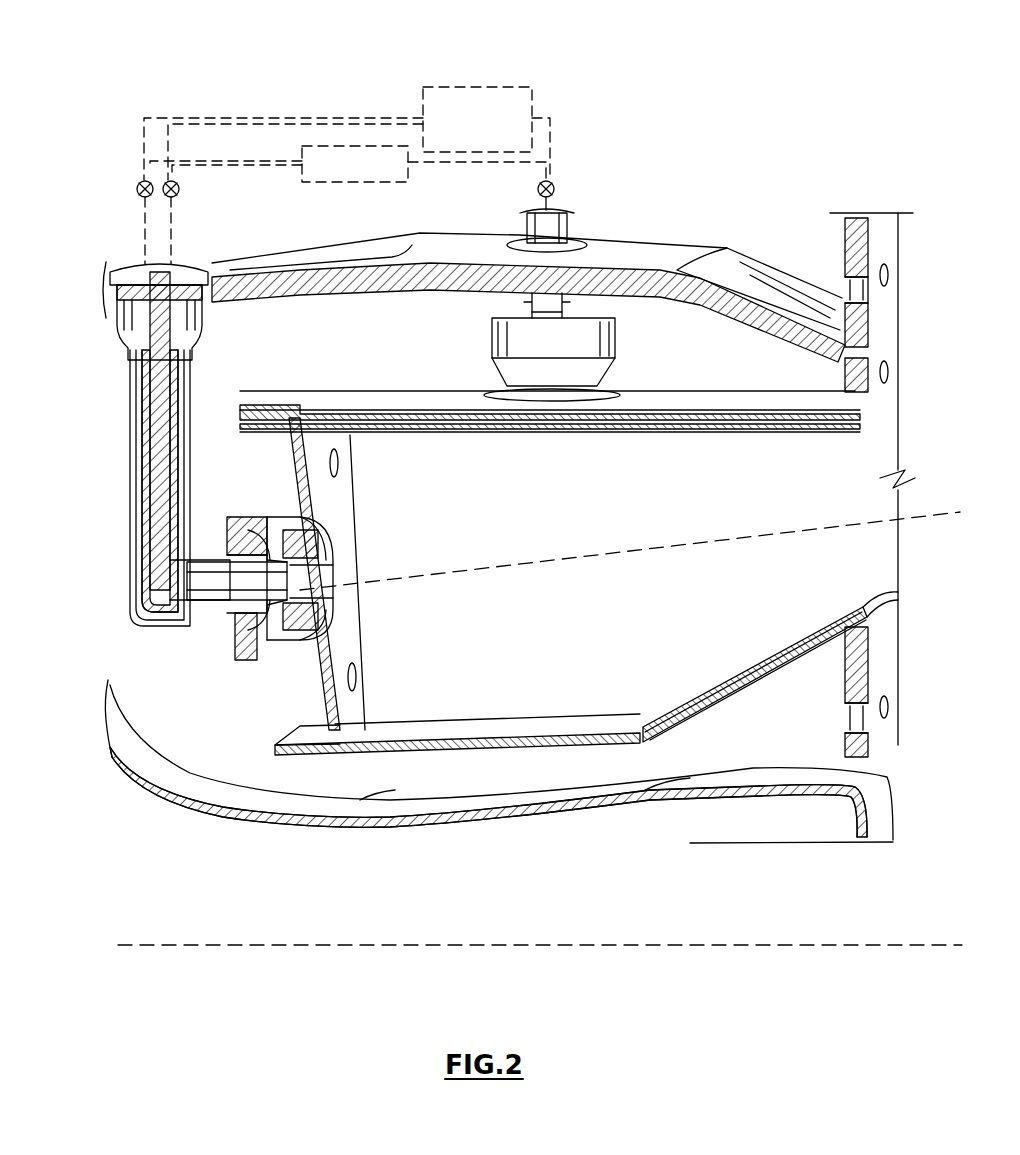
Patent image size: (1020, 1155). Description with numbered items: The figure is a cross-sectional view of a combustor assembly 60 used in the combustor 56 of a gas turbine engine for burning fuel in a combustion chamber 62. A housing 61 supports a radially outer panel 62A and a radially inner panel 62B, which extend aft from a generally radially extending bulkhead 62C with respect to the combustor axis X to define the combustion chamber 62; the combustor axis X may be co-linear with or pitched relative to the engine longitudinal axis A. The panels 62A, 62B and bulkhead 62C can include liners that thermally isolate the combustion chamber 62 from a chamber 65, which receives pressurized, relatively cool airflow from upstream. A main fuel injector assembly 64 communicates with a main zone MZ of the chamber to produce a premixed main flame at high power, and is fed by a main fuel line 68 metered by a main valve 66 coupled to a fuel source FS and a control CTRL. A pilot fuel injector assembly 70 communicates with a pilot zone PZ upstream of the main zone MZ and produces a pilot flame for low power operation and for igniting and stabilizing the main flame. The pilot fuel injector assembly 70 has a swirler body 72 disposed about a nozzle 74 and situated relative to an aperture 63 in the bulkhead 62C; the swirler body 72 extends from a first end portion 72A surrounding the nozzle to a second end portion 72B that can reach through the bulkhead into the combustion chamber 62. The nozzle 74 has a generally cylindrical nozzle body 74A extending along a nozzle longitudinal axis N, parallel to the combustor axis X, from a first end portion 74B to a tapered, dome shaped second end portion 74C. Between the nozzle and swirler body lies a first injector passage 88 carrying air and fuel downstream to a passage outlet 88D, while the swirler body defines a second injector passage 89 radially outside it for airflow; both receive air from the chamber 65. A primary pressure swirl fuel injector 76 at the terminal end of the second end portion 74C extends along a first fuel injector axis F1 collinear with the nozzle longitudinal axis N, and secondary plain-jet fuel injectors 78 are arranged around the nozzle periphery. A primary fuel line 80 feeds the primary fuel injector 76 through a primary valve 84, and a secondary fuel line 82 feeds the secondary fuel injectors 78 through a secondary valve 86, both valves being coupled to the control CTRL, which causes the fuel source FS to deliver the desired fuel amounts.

The combustor 56 is at (503, 479).
The combustor assembly 60 is at (150, 64).
The housing 61 is at (699, 236).
The combustion chamber 62 is at (582, 668).
The radially outer panel 62A is at (350, 396).
The radially inner panel 62B is at (468, 748).
The bulkhead 62C is at (354, 464).
The aperture 63 is at (320, 533).
The main fuel injector assembly 64 is at (476, 331).
The chamber 65 is at (326, 345).
The main valve 66 is at (554, 184).
The main fuel line 68 is at (570, 213).
The pilot fuel injector assembly 70 is at (108, 460).
The swirler body 72 is at (244, 506).
The first end portion 72A is at (227, 540).
The second end portion 72B is at (333, 545).
The nozzle 74 is at (207, 632).
The nozzle body 74A is at (228, 602).
The first end portion 74B is at (200, 617).
The second end portion 74C is at (337, 593).
The primary fuel injector 76 is at (233, 602).
The secondary fuel injector 78 is at (234, 520).
The primary fuel line 80 is at (174, 377).
The secondary fuel line 82 is at (148, 377).
The primary valve 84 is at (178, 193).
The secondary valve 86 is at (137, 186).
The first injector passage 88 is at (321, 600).
The passage outlet 88D is at (335, 575).
The second injector passage 89 is at (312, 522).
The fuel source FS is at (534, 96).
The control CTRL is at (352, 183).
The pilot zone PZ is at (405, 660).
The main zone MZ is at (505, 660).
The first fuel injector axis F1 is at (630, 565).
The nozzle longitudinal axis N is at (498, 573).
The combustor axis X is at (933, 514).
The engine longitudinal axis A is at (910, 945).